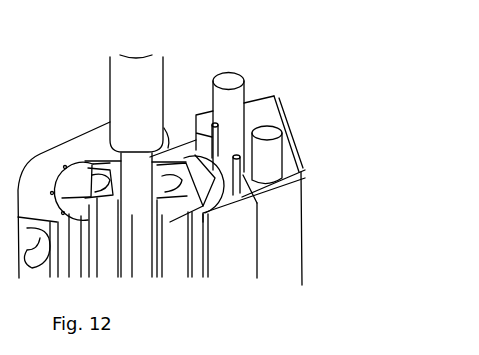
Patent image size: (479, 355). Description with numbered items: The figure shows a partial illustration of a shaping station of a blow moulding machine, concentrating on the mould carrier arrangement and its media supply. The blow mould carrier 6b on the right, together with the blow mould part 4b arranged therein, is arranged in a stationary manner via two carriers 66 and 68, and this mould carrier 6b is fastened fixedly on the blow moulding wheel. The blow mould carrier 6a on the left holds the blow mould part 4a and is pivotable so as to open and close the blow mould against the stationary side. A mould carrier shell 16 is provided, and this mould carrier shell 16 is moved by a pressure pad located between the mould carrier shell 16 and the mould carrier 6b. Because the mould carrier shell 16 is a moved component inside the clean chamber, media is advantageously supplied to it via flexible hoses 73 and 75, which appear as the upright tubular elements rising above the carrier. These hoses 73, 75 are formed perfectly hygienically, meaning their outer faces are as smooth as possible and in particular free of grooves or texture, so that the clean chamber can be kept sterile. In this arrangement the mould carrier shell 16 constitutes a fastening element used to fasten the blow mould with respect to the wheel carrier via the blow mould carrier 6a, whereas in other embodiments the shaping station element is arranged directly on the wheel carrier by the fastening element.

The blow mould carrier 6a is at (52, 165).
The blow mould part 4a is at (107, 170).
The blow mould part 4b is at (175, 260).
The blow mould carrier 6b is at (290, 207).
The mould carrier shell 16 is at (242, 237).
The carrier 68 is at (227, 102).
The hose 73 is at (246, 100).
The carrier 66 is at (263, 148).
The hose 75 is at (241, 172).